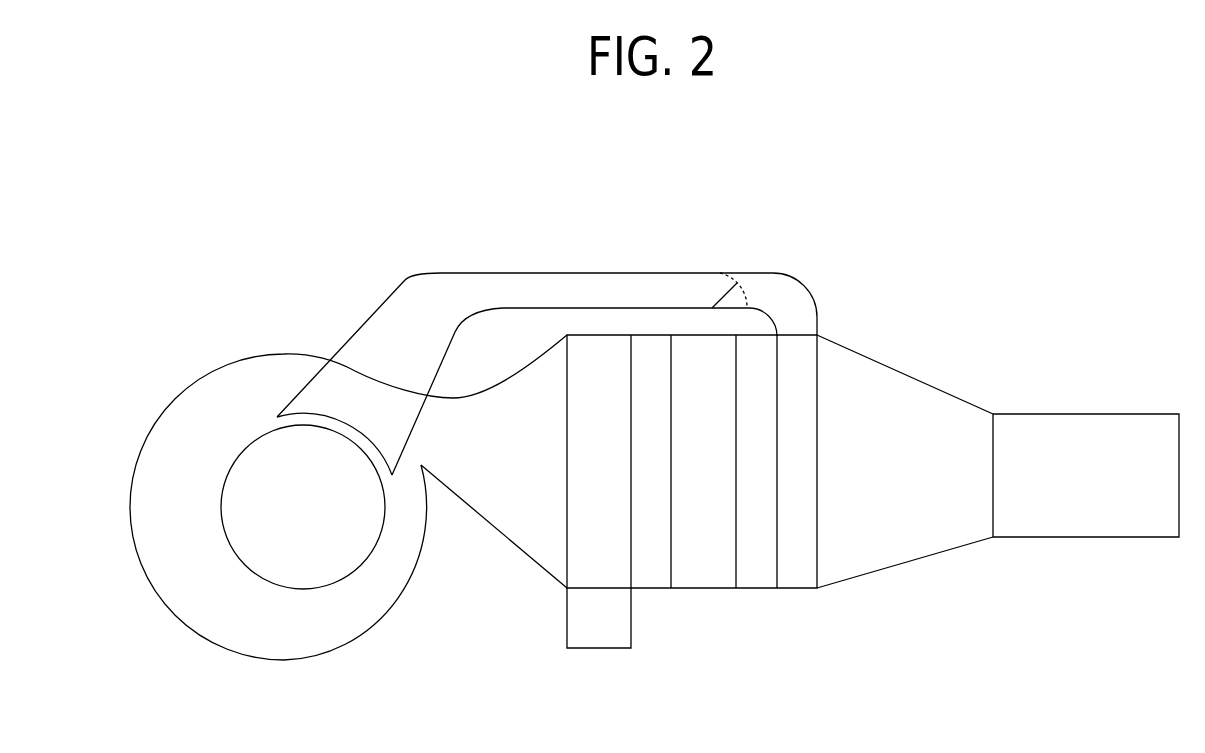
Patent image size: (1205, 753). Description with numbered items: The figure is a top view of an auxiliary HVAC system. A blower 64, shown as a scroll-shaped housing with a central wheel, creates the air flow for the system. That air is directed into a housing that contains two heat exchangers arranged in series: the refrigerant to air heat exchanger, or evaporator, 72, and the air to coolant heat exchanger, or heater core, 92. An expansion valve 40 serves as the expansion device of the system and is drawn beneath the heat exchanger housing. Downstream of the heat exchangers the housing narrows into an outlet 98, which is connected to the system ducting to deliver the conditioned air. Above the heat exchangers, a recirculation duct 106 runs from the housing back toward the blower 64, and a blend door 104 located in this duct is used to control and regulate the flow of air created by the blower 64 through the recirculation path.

The expansion valve 40 is at (565, 613).
The blower 64 is at (245, 567).
The refrigerant to air heat exchanger (evaporator) 72 is at (632, 552).
The air to coolant heat exchanger (heater core) 92 is at (725, 590).
The outlet 98 is at (1072, 435).
The blend door 104 is at (712, 303).
The recirculation duct 106 is at (490, 273).